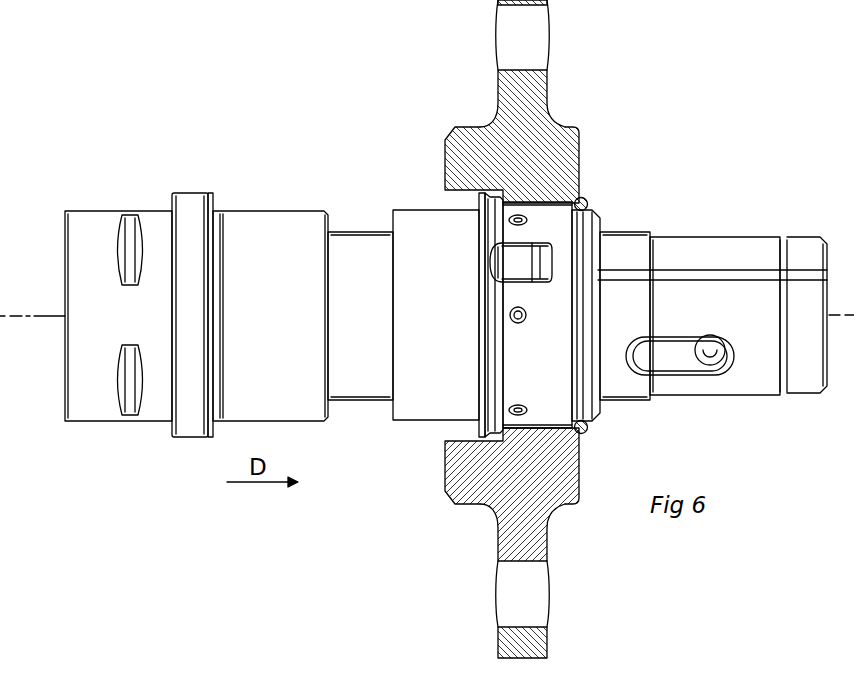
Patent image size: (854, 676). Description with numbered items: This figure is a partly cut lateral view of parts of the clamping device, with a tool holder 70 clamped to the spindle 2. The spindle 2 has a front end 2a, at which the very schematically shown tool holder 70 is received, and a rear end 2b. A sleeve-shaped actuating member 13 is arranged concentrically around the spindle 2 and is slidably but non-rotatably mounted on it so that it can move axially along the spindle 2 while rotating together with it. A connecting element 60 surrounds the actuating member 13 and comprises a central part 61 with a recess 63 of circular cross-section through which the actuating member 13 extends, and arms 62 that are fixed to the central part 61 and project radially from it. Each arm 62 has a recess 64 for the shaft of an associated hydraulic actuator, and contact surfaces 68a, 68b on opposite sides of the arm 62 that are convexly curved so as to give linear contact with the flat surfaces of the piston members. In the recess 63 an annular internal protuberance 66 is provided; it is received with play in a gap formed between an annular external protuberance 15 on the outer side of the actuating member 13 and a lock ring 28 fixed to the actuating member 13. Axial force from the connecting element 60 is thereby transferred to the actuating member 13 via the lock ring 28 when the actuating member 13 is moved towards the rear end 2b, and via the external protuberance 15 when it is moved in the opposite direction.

The tool holder 70 is at (77, 225).
The spindle 2 is at (267, 222).
The front end 2a is at (195, 178).
The rear end 2b is at (809, 222).
The actuating member 13 is at (405, 392).
The annular external protuberance 15 is at (490, 426).
The recess 63 is at (478, 195).
The connecting element 60 is at (425, 138).
The central part 61 is at (562, 155).
The arm 62 is at (538, 97).
The recess 64 is at (508, 64).
The annular internal protuberance 66 is at (540, 428).
The contact surface 68a is at (497, 45).
The contact surface 68b is at (550, 44).
The lock ring 28 is at (584, 428).